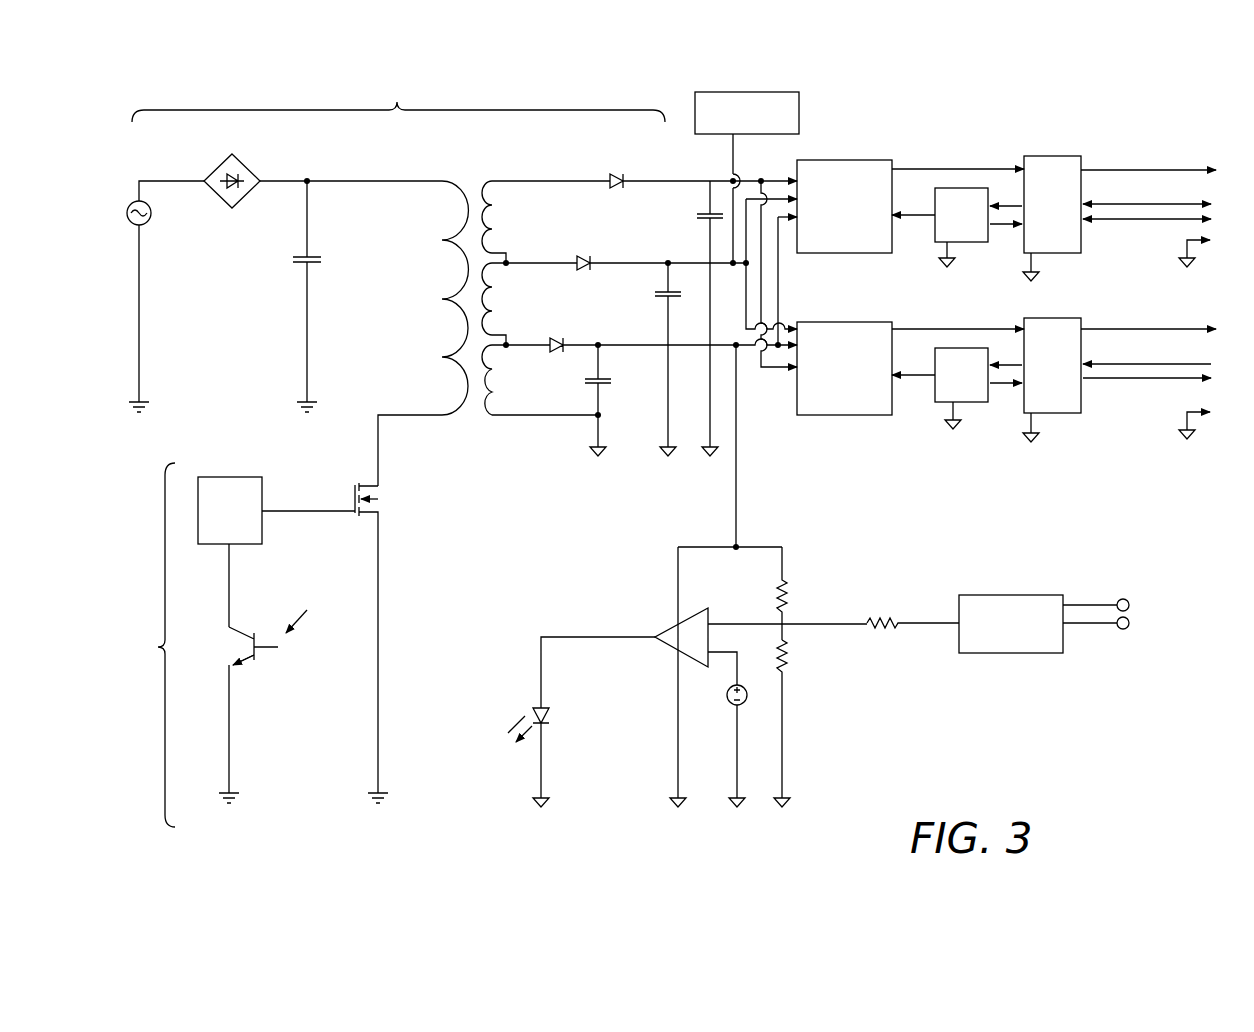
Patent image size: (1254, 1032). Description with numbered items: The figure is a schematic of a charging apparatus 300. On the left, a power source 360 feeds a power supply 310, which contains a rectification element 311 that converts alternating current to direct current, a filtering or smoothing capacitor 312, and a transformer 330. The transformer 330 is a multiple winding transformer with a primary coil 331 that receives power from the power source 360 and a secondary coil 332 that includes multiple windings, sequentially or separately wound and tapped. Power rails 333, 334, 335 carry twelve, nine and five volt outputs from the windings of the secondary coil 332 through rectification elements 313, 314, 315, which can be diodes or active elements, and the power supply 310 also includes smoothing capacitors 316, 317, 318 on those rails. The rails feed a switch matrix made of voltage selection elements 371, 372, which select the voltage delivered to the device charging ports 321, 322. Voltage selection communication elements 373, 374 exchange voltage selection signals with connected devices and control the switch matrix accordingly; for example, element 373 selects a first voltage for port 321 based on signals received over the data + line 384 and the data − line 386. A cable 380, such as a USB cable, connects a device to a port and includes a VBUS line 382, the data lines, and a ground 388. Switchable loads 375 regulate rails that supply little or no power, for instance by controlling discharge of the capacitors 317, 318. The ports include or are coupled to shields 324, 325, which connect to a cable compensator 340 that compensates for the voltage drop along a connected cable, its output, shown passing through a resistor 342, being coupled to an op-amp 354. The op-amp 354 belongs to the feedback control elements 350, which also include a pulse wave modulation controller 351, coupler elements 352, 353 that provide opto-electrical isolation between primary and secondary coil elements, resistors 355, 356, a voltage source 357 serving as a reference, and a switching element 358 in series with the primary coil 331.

The apparatus 300 is at (1100, 105).
The power supply 310 is at (398, 99).
The rectification element 311 is at (232, 209).
The filtering or smoothing capacitor 312 is at (293, 264).
The rectification element 313 is at (554, 340).
The rectification element 314 is at (581, 258).
The rectification element 315 is at (614, 175).
The smoothing capacitor 316 is at (610, 380).
The smoothing capacitor 317 is at (658, 299).
The smoothing capacitor 318 is at (704, 214).
The device charging port 321 is at (1043, 156).
The device charging port 322 is at (1040, 318).
The shield 324 is at (1073, 255).
The shield 325 is at (1073, 415).
The transformer 330 is at (498, 166).
The primary coil 331 is at (443, 419).
The secondary coil 332 is at (492, 419).
The power rail 333 is at (518, 344).
The power rail 334 is at (531, 262).
The power rail 335 is at (571, 180).
The cable compensator 340 is at (1032, 654).
The resistor 342 is at (893, 630).
The feedback control elements 350 is at (158, 649).
The pulse wave modulation controller 351 is at (229, 477).
The coupler element 352 is at (262, 643).
The coupler element 353 is at (546, 706).
The op-amp 354 is at (703, 614).
The resistor 355 is at (790, 600).
The resistor 356 is at (790, 661).
The voltage source 357 is at (733, 706).
The switching element 358 is at (362, 483).
The power source 360 is at (127, 213).
The voltage selection element 371 is at (843, 160).
The voltage selection element 372 is at (843, 322).
The voltage selection communication element 373 is at (963, 243).
The voltage selection communication element 374 is at (963, 403).
The switchable loads 375 is at (785, 92).
The cable 380 is at (1168, 140).
The VBUS line 382 is at (1097, 172).
The data + line 384 is at (1152, 204).
The data − line 386 is at (1105, 219).
The ground 388 is at (1198, 249).